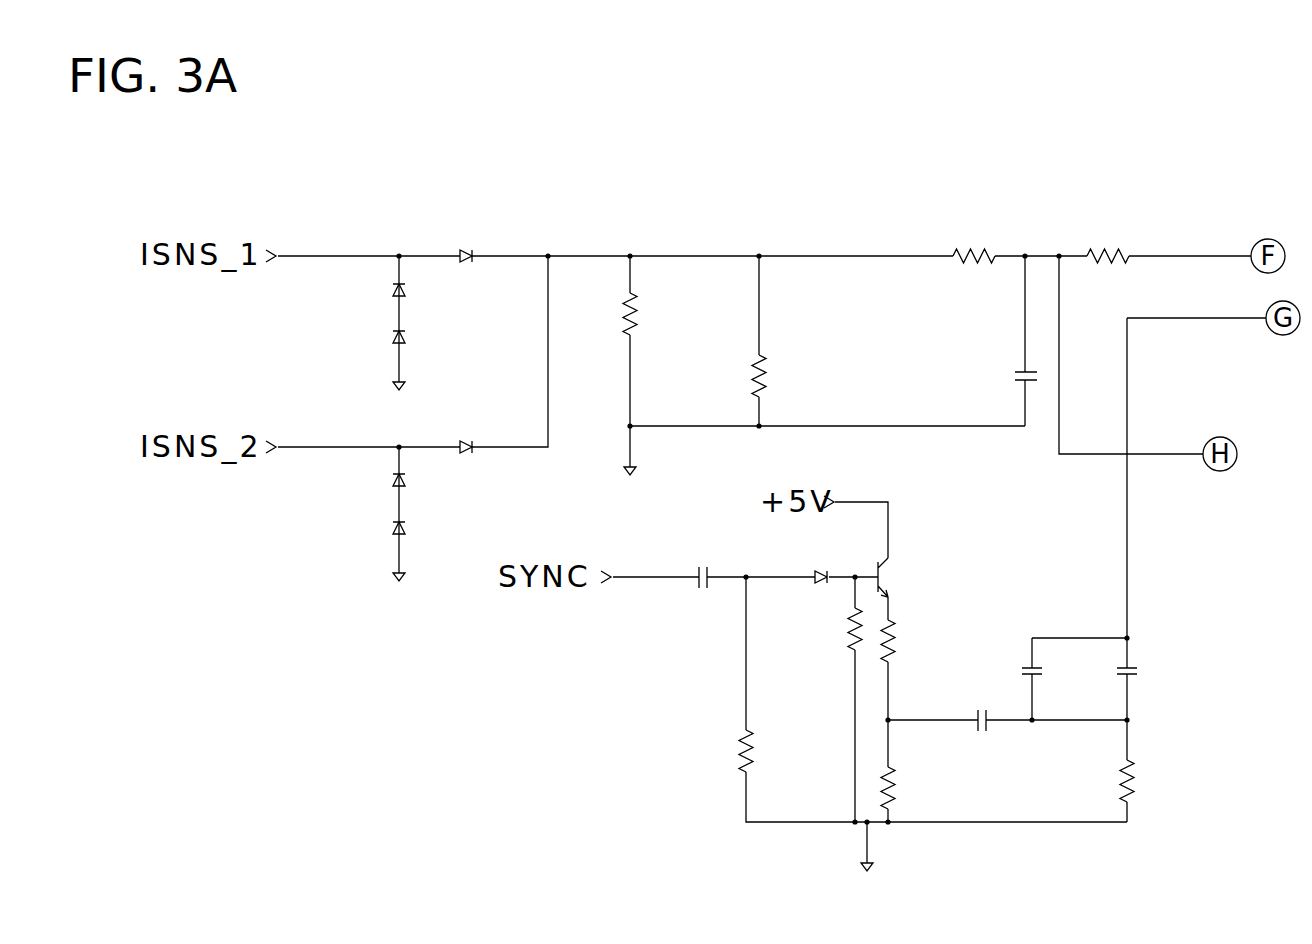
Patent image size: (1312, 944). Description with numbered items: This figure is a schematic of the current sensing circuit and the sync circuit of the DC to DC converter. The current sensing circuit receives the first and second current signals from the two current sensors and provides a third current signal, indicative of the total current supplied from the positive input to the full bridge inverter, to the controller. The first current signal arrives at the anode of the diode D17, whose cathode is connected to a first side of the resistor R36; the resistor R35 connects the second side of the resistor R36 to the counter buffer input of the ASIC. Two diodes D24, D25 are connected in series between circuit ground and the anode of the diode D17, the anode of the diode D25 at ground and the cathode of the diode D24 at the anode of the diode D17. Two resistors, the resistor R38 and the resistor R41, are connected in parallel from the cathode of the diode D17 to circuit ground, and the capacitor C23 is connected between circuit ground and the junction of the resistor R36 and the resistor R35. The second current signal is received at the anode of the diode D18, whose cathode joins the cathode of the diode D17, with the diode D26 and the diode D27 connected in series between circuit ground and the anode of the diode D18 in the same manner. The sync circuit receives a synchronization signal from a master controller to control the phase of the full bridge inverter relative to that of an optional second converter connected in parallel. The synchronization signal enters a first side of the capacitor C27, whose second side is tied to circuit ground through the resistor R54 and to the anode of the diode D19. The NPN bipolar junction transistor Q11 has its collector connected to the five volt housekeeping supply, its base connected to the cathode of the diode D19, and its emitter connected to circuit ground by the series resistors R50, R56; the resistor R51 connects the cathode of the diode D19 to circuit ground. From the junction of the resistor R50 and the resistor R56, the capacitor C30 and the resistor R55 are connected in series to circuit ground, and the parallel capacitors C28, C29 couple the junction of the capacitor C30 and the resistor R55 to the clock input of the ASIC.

The diode D17 is at (478, 238).
The diode D18 is at (478, 429).
The diode D19 is at (828, 560).
The diode D24 is at (440, 289).
The diode D25 is at (440, 336).
The diode D26 is at (440, 481).
The diode D27 is at (440, 529).
The resistor R38 is at (667, 314).
The resistor R41 is at (726, 376).
The resistor R36 is at (972, 239).
The resistor R35 is at (1111, 239).
The capacitor C23 is at (990, 364).
The capacitor C27 is at (701, 593).
The transistor Q11 is at (921, 577).
The resistor R51 is at (822, 629).
The resistor R50 is at (921, 641).
The resistor R54 is at (782, 752).
The resistor R56 is at (921, 787).
The resistor R55 is at (1164, 781).
The capacitor C30 is at (982, 701).
The capacitor C29 is at (1067, 669).
The capacitor C28 is at (1162, 669).